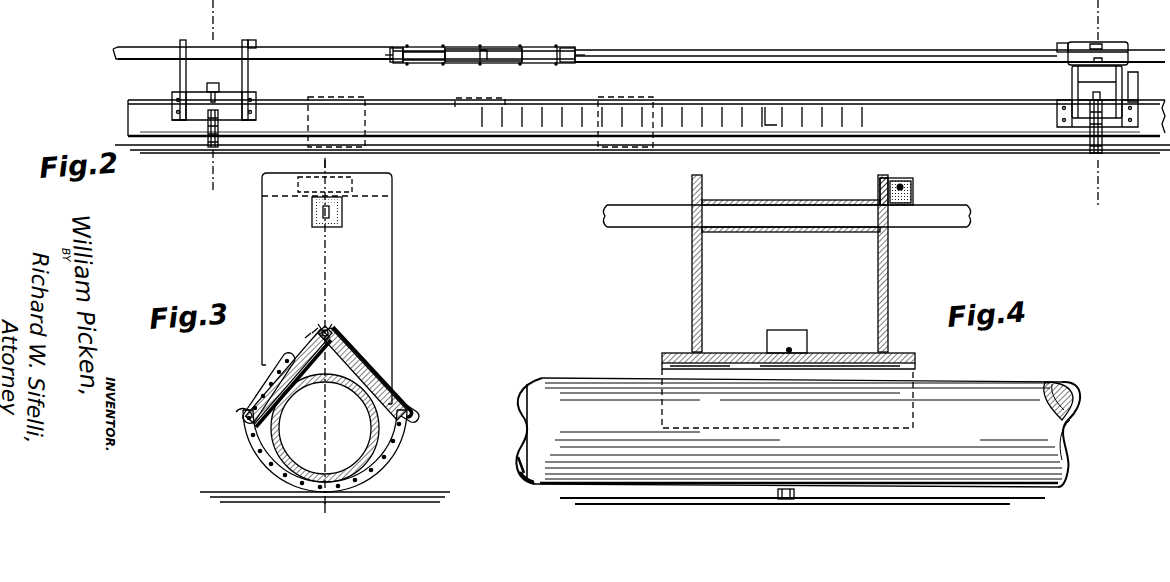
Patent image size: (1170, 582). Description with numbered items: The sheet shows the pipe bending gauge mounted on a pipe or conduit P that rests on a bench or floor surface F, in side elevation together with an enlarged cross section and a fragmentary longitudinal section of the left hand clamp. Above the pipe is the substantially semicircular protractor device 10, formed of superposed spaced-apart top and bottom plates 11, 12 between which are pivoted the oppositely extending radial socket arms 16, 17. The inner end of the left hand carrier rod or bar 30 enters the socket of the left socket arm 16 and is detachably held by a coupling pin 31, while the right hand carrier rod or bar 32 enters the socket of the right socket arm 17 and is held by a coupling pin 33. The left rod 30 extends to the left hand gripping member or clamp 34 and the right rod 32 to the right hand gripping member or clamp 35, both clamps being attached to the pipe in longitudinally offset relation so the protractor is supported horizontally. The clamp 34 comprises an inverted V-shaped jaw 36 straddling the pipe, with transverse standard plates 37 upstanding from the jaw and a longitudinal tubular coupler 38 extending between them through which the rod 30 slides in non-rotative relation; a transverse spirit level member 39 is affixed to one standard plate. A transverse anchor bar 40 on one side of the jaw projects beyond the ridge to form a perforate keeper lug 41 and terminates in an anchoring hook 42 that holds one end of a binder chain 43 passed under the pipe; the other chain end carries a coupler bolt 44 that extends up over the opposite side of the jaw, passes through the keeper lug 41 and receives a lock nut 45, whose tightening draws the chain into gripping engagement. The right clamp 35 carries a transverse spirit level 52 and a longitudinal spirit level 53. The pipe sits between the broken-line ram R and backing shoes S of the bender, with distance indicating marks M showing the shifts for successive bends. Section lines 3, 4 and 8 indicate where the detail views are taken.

In FIG. 2, the protractor device 10 is at (421, 46).
In FIG. 2, the top plate 11 is at (499, 48).
In FIG. 2, the bottom plate 12 is at (455, 66).
In FIG. 2, the left hand socket arm 16 is at (390, 60).
In FIG. 2, the right hand socket arm 17 is at (576, 60).
In FIG. 2, the left hand carrier rod or bar 30 is at (342, 48).
In FIG. 4, the left hand carrier rod or bar 30 is at (663, 205).
In FIG. 2, the coupling pin 31 is at (395, 47).
In FIG. 2, the right hand carrier rod or bar 32 is at (847, 50).
In FIG. 2, the coupling pin 33 is at (567, 48).
In FIG. 2, the left hand pipe gripping member or clamp 34 is at (177, 94).
In FIG. 3, the left hand pipe gripping member or clamp 34 is at (394, 296).
In FIG. 4, the left hand pipe gripping member or clamp 34 is at (668, 352).
In FIG. 2, the right hand pipe gripping member or clamp 35 is at (1063, 98).
In FIG. 2, the inverted V-shaped jaw 36 is at (214, 106).
In FIG. 3, the inverted V-shaped jaw 36 is at (365, 360).
In FIG. 4, the inverted V-shaped jaw 36 is at (915, 360).
In FIG. 2, the standard plates 37 is at (214, 80).
In FIG. 3, the standard plates 37 is at (389, 245).
In FIG. 4, the standard plates 37 is at (692, 268).
In FIG. 2, the tubular coupler 38 is at (213, 92).
In FIG. 3, the tubular coupler 38 is at (312, 212).
In FIG. 4, the tubular coupler 38 is at (817, 191).
In FIG. 2, the transverse spirit level member 39 is at (255, 40).
In FIG. 3, the transverse spirit level member 39 is at (354, 190).
In FIG. 4, the transverse spirit level member 39 is at (907, 180).
In FIG. 3, the anchor bar 40 is at (317, 338).
In FIG. 3, the perforate keeper lug 41 is at (329, 334).
In FIG. 4, the perforate keeper lug 41 is at (796, 334).
In FIG. 3, the anchoring hook 42 is at (236, 418).
In FIG. 2, the binder chain 43 is at (213, 128).
In FIG. 3, the binder chain 43 is at (250, 459).
In FIG. 4, the binder chain 43 is at (786, 502).
In FIG. 3, the coupler bolt 44 is at (376, 384).
In FIG. 4, the coupler bolt 44 is at (788, 348).
In FIG. 3, the lock nut 45 is at (325, 322).
In FIG. 2, the transverse spirit level 52 is at (1060, 42).
In FIG. 2, the longitudinal spirit level 53 is at (1114, 46).
In FIG. 2, the backing shoes S is at (365, 100).
In FIG. 2, the ram R is at (456, 102).
In FIG. 2, the distance indicating marks M is at (778, 112).
In FIG. 2, the pipe or conduit P is at (829, 113).
In FIG. 3, the pipe or conduit P is at (401, 436).
In FIG. 4, the pipe or conduit P is at (999, 384).
In FIG. 2, the floor surface F is at (566, 140).
In FIG. 3, the floor surface F is at (418, 494).
In FIG. 4, the floor surface F is at (667, 494).
In FIG. 2, the section line 3- 3 is at (195, 192).
In FIG. 3, the section line 4- 4 is at (327, 163).
In FIG. 2, the section line 8- 8 is at (1085, 5).